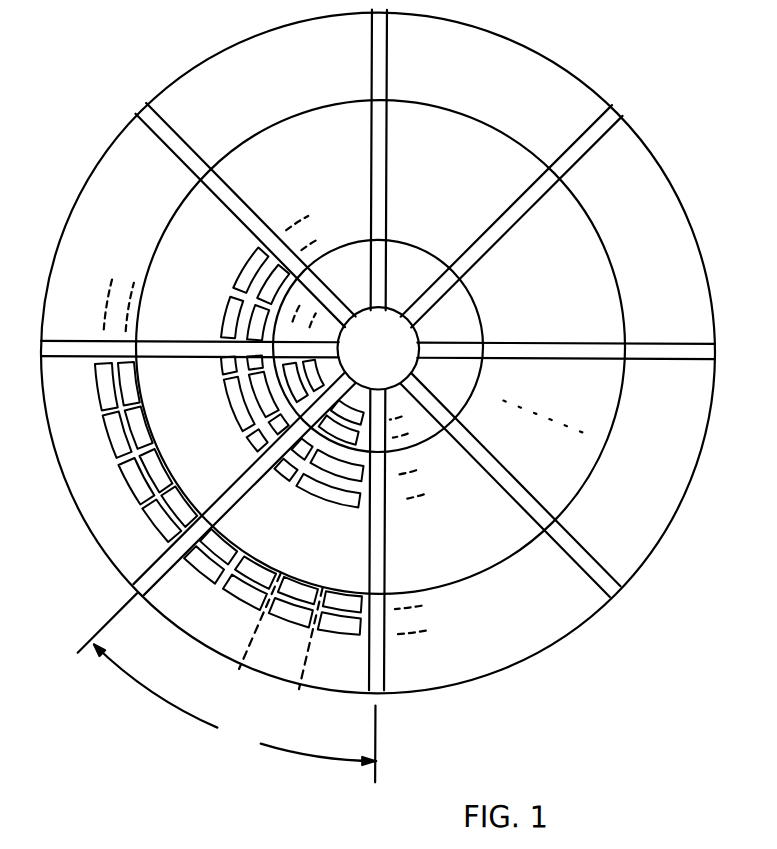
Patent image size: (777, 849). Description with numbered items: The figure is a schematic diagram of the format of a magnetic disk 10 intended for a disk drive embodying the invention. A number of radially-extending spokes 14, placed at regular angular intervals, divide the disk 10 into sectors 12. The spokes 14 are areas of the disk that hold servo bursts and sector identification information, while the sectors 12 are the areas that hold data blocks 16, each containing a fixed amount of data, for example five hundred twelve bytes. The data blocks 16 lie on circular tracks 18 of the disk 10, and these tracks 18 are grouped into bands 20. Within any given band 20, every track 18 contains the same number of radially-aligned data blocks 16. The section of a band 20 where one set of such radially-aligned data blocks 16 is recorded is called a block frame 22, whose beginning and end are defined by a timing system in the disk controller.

The magnetic disk 10 is at (264, 40).
The sectors 12 is at (227, 687).
The radially-extending spokes 14 is at (607, 112).
The data blocks 16 is at (150, 521).
The circular tracks 18 is at (447, 626).
The bands 20 is at (415, 366).
The block frame 22 is at (281, 667).